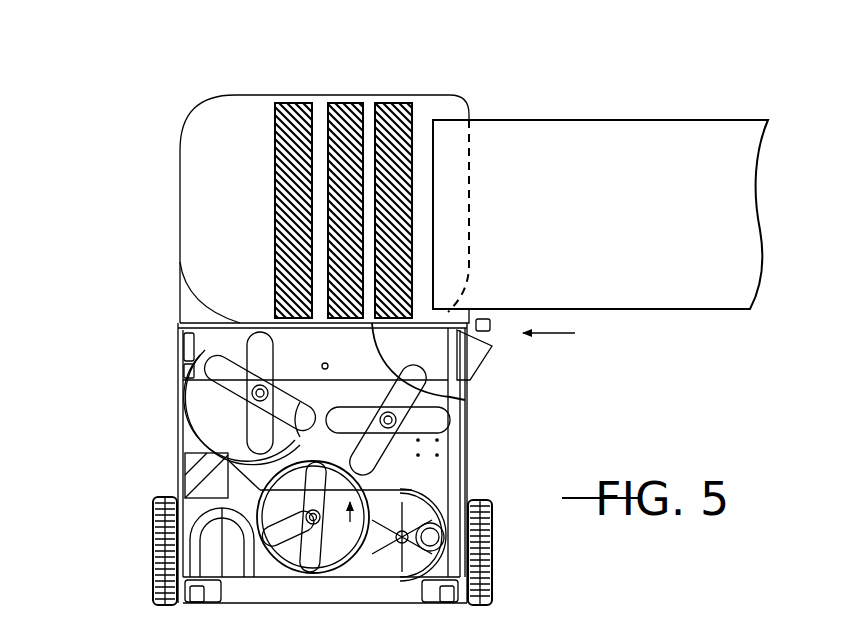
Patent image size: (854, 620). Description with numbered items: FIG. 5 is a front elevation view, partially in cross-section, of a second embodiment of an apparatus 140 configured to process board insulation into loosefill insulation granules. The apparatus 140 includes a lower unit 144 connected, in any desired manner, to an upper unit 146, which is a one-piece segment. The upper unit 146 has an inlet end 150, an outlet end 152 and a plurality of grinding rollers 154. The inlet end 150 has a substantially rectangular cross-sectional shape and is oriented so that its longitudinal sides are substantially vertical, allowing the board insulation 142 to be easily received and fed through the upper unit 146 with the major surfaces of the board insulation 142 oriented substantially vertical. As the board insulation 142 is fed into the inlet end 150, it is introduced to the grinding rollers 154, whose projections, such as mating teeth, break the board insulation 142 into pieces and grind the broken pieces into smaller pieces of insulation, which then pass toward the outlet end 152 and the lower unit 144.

The apparatus 140 is at (93, 178).
The board insulation 142 is at (657, 120).
The lower unit 144 is at (180, 378).
The upper unit 146 is at (180, 262).
The inlet end 150 is at (470, 118).
The outlet end 152 is at (465, 400).
The grinding rollers 154 is at (393, 103).